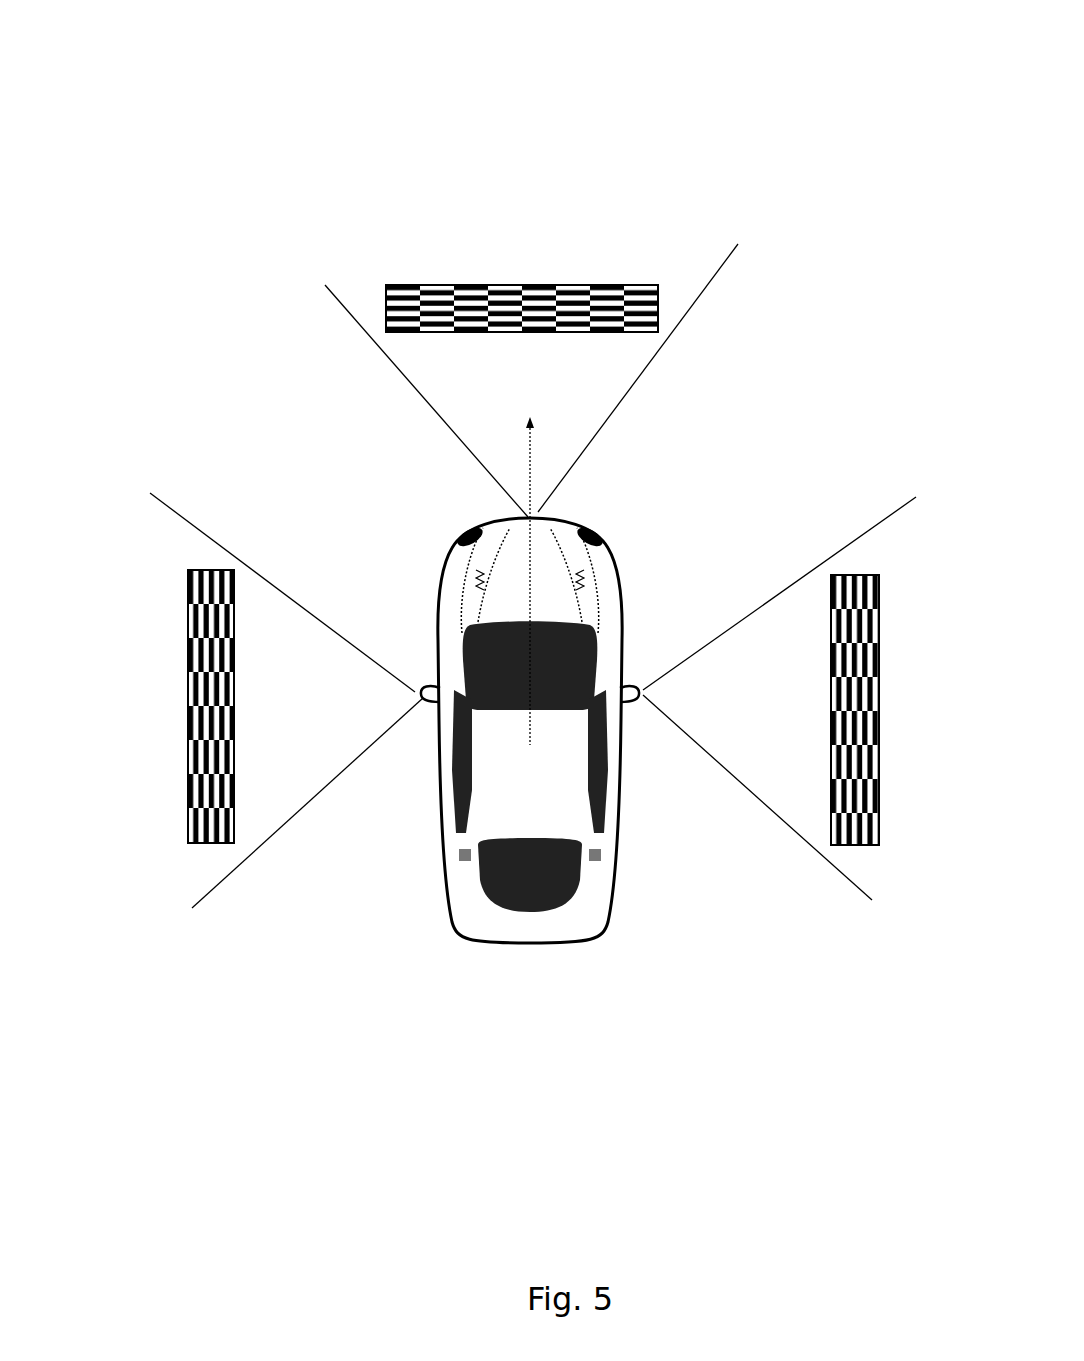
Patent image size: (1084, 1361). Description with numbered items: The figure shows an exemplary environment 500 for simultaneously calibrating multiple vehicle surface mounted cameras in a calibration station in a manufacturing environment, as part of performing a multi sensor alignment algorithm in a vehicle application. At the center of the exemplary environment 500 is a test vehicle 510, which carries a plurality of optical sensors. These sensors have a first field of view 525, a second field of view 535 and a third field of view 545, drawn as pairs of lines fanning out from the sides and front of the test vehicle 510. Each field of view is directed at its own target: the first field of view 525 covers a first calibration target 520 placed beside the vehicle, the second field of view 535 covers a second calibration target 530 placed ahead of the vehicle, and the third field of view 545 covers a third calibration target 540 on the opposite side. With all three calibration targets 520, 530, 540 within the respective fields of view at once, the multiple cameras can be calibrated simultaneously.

The exemplary environment 500 is at (585, 30).
The test vehicle 510 is at (435, 532).
The first calibration target 520 is at (177, 730).
The first field of view 525 is at (374, 738).
The second calibration target 530 is at (636, 280).
The second field of view 535 is at (466, 436).
The third calibration target 540 is at (878, 690).
The third field of view 545 is at (688, 728).